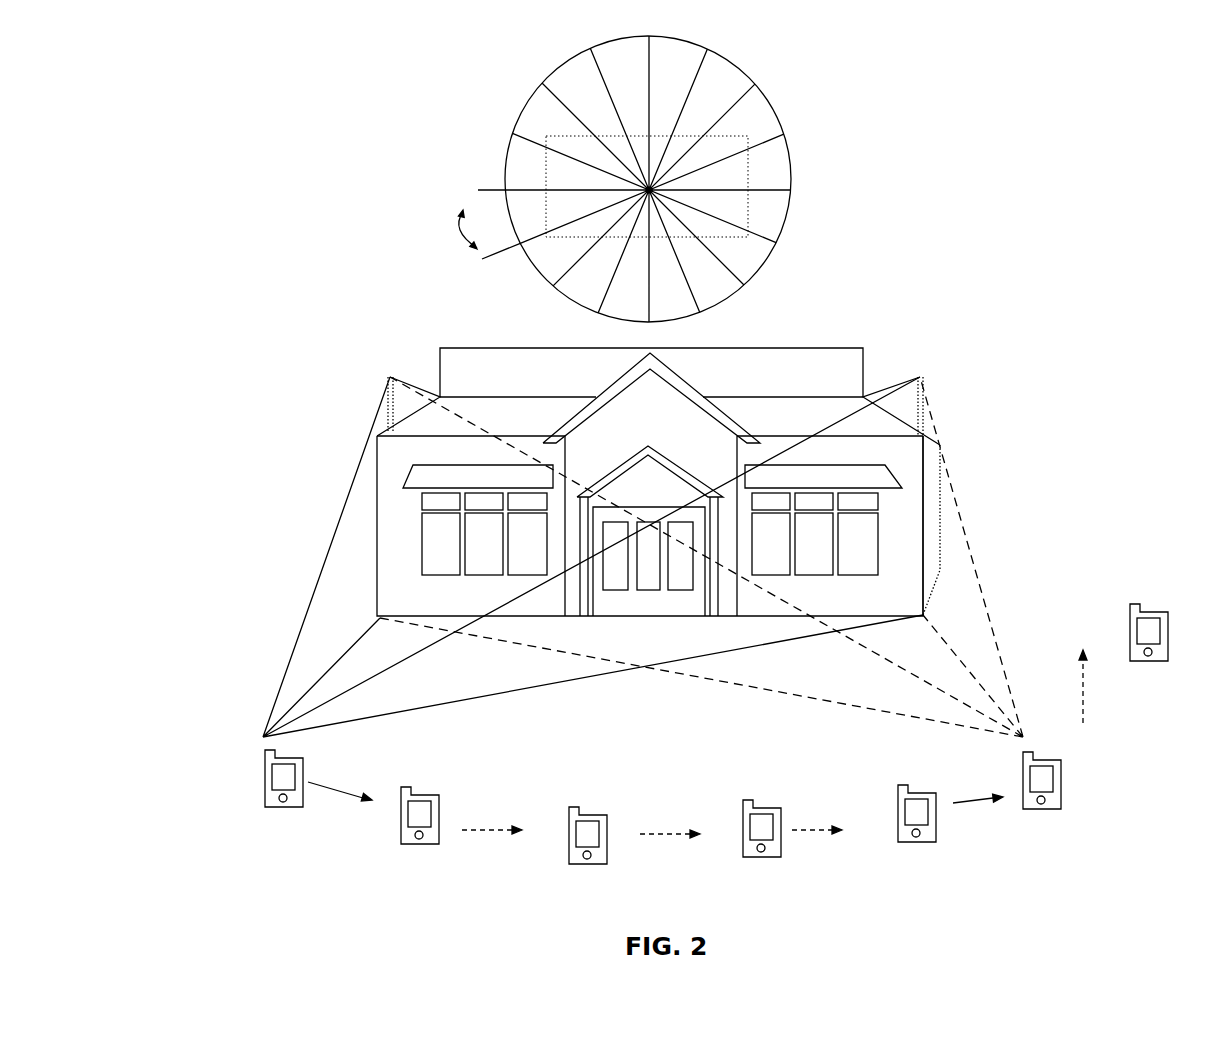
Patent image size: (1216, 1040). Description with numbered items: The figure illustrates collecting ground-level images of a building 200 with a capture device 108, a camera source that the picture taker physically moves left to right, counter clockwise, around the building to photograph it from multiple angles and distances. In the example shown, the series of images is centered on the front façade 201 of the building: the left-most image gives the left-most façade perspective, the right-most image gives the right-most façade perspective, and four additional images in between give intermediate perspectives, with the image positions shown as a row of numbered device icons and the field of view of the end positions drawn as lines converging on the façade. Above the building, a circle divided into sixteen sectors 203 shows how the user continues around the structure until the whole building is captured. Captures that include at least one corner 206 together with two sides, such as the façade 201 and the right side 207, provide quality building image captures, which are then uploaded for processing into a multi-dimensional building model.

The capture device 108 is at (265, 781).
The building 200 is at (728, 404).
The façade 201 is at (909, 612).
The sectors 203 is at (757, 87).
The corner 206 is at (923, 568).
The right side 207 is at (935, 512).